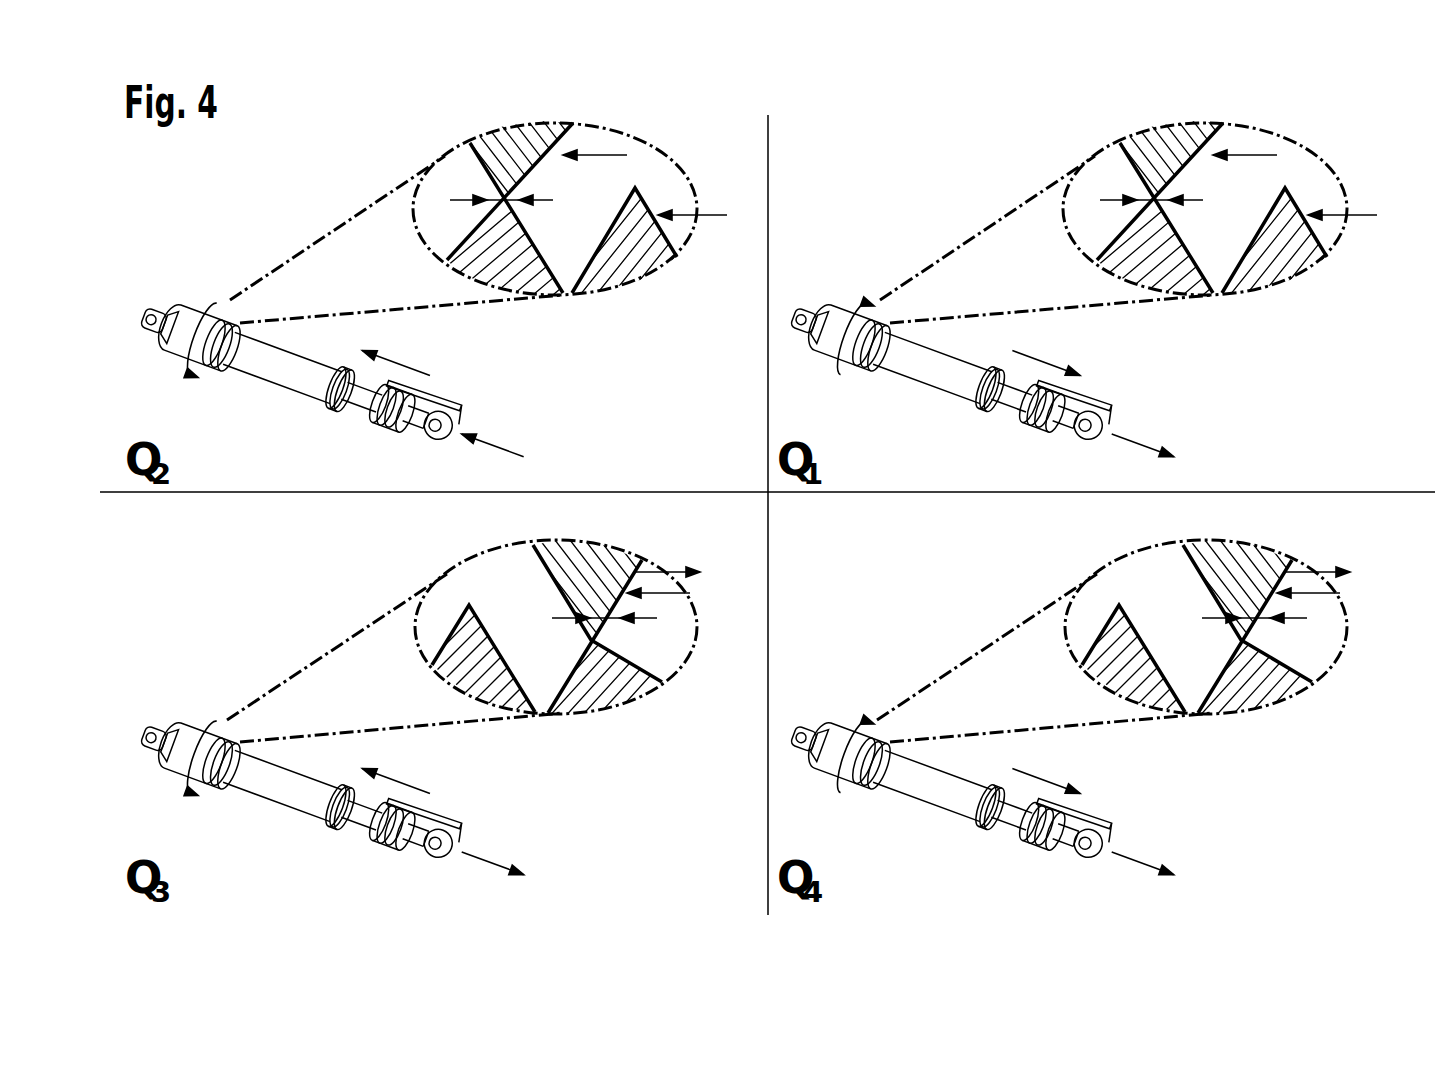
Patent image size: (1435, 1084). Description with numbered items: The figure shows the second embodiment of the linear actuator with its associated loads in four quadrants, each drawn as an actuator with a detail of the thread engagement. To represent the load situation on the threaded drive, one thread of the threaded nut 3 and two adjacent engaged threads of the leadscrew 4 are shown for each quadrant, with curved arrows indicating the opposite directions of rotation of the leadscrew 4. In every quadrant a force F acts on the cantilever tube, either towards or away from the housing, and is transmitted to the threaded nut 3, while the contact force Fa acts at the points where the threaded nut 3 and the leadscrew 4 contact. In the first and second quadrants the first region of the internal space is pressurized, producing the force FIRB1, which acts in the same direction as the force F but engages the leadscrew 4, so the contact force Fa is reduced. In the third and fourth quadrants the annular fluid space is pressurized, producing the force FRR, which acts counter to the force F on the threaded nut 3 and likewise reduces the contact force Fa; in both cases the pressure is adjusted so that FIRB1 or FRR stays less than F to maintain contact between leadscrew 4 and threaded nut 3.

The threaded nut 3 is at (528, 152).
The leadscrew 4 is at (630, 240).
The force F is at (1337, 144).
The contact force Fa is at (1333, 700).
The force resulting from the pressure in the annular fluid space FRR is at (663, 580).
The force resulting from the pressure in the first region FIRB1 is at (713, 217).